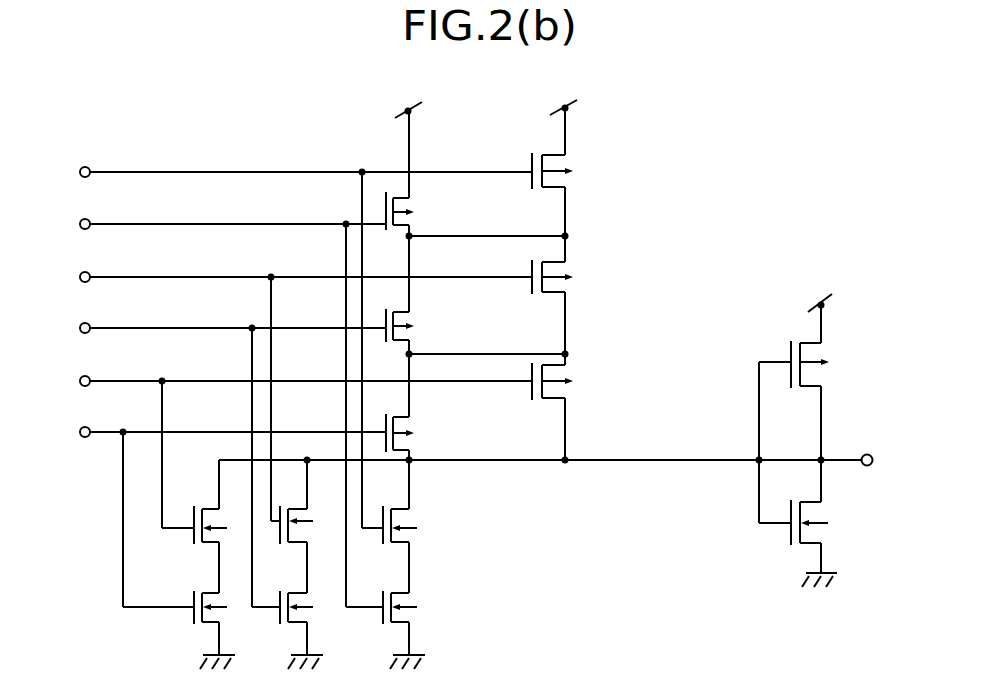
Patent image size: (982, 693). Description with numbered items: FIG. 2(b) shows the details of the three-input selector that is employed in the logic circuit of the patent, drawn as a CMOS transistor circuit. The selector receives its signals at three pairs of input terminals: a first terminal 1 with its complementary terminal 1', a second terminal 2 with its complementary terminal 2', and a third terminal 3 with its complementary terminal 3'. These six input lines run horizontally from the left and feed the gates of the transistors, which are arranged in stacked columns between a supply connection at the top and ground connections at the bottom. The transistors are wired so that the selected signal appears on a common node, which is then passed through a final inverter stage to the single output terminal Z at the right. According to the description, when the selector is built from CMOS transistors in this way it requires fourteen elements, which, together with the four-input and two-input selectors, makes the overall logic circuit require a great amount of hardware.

The input terminal 1 is at (293, 173).
The complementary input terminal 1' is at (220, 225).
The input terminal 2 is at (293, 278).
The complementary input terminal 2' is at (220, 329).
The input terminal 3 is at (293, 382).
The complementary input terminal 3' is at (220, 433).
The output terminal Z is at (879, 462).